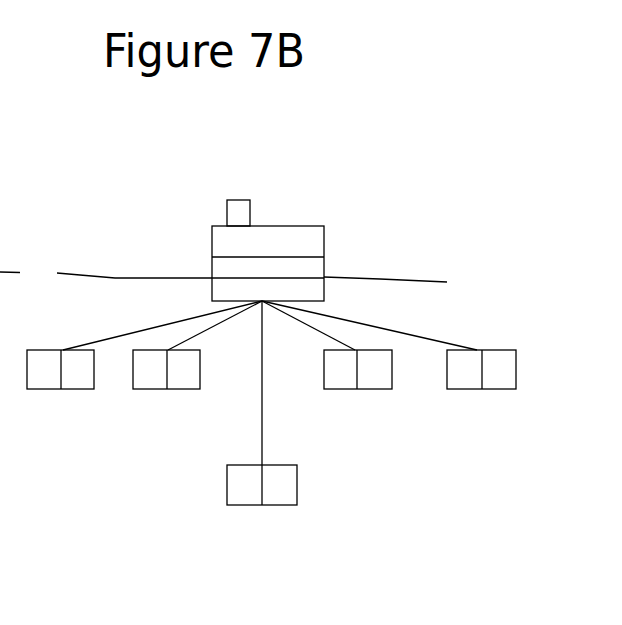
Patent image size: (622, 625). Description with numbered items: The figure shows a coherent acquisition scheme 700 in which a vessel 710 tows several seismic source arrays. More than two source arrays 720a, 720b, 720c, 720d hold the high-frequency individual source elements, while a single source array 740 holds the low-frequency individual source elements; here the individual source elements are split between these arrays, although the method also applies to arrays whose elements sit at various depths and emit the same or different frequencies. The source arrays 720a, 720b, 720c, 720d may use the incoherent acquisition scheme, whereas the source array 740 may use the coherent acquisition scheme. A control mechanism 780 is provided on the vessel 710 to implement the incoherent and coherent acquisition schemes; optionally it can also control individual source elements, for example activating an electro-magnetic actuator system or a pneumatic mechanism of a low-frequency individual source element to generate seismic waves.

The system 700 is at (298, 112).
The vessel 710 is at (324, 240).
The control mechanism 780 is at (237, 212).
The source array 720a is at (44, 380).
The source array 720b is at (153, 380).
The source array 720c is at (375, 377).
The source array 720d is at (500, 375).
The source array 740 is at (276, 497).